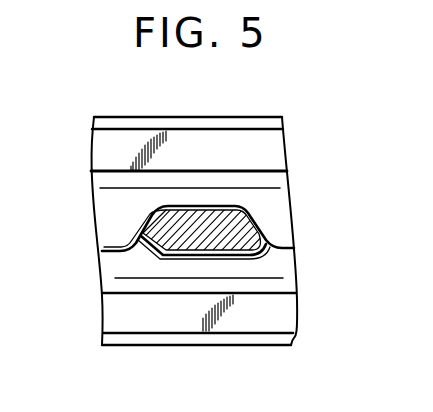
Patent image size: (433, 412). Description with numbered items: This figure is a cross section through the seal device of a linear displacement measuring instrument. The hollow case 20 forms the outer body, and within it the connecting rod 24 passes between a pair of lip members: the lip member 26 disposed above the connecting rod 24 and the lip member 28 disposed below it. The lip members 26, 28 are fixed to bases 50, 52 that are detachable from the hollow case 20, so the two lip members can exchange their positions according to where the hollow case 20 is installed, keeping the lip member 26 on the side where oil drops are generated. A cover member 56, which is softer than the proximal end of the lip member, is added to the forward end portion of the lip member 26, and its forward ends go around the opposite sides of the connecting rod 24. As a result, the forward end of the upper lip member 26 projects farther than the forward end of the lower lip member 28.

The hollow case 20 is at (220, 117).
The base 50 is at (272, 150).
The lip member 26 is at (272, 206).
The connecting rod 24 is at (253, 226).
The cover member 56 is at (282, 251).
The lip member 28 is at (283, 268).
The base 52 is at (115, 313).